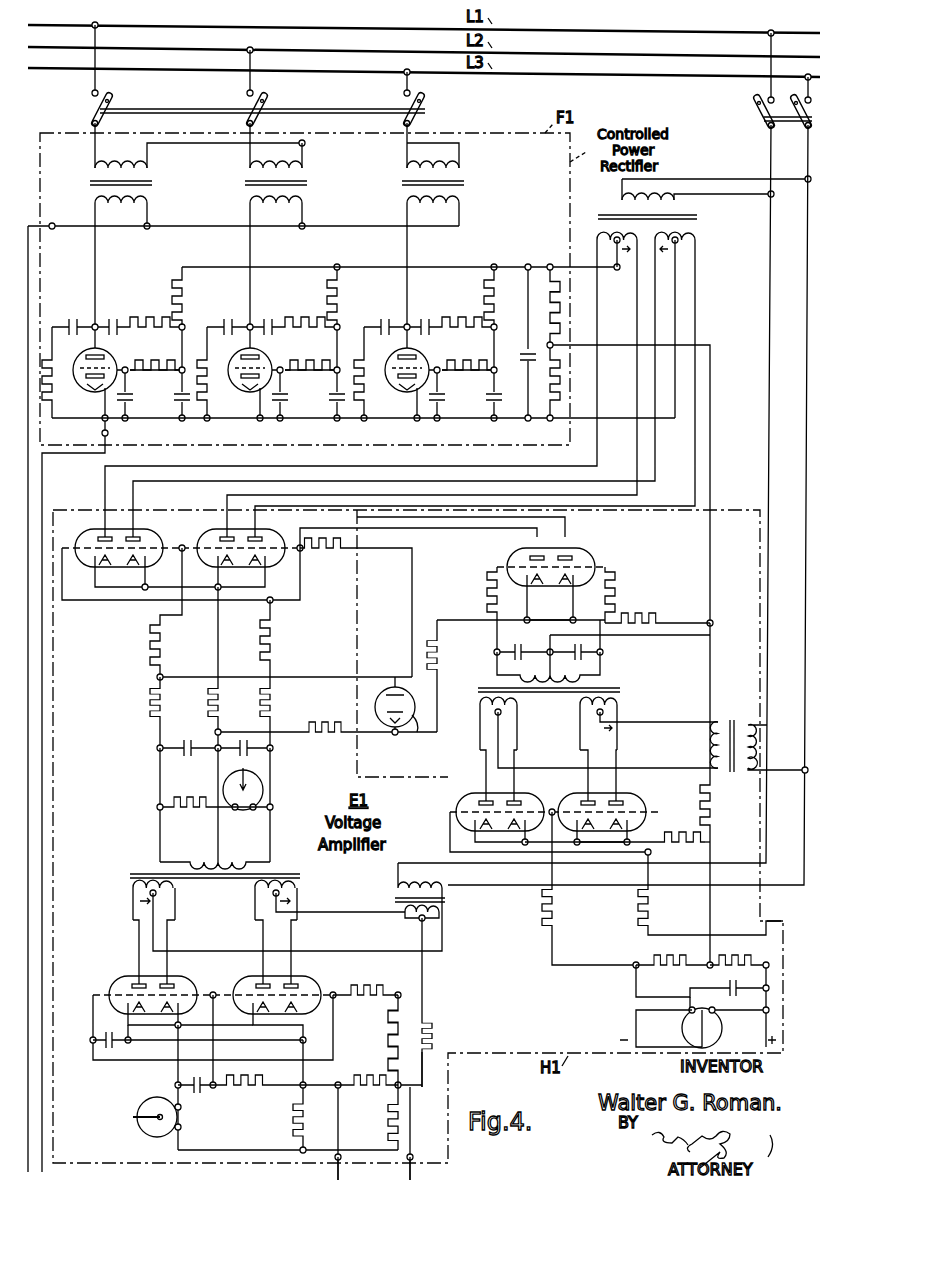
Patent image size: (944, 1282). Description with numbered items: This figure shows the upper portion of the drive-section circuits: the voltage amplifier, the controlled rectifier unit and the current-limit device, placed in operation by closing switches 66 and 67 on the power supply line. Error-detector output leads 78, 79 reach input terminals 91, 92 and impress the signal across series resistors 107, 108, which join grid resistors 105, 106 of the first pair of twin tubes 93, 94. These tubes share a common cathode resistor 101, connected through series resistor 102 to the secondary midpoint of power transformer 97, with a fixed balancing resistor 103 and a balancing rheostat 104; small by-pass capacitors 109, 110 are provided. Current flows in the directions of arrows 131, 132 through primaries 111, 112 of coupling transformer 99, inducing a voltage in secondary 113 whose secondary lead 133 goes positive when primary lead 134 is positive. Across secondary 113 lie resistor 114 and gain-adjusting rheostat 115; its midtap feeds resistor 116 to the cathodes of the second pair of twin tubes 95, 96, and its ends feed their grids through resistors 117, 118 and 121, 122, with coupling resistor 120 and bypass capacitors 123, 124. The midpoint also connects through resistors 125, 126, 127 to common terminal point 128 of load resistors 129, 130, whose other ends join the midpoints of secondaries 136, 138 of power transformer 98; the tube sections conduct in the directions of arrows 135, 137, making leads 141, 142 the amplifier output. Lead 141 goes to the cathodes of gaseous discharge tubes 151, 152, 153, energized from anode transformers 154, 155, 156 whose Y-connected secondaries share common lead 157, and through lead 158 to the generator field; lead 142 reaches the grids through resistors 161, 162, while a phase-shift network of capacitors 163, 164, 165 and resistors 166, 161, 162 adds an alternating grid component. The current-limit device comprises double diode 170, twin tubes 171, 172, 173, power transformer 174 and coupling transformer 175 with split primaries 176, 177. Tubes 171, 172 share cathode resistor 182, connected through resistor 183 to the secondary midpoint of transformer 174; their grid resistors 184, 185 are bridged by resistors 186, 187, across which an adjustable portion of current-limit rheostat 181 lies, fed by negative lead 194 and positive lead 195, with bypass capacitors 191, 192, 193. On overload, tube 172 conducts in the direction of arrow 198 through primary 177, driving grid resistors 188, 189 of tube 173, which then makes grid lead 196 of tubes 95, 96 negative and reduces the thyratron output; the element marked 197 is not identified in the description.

The switch 66 is at (424, 110).
The switch 67 is at (758, 116).
The anode transformer 154 is at (148, 183).
The anode transformer 155 is at (303, 183).
The anode transformer 156 is at (459, 183).
The common lead 157 is at (186, 226).
The lead 158 is at (42, 483).
The power transformer 98 is at (616, 210).
The secondary 138 is at (596, 240).
The secondary 136 is at (690, 238).
The arrow 137 is at (625, 250).
The arrow 135 is at (668, 251).
The output lead 142 is at (452, 267).
The output lead 141 is at (452, 420).
The gaseous discharge tube 151 is at (85, 405).
The gaseous discharge tube 152 is at (250, 405).
The gaseous discharge tube 153 is at (407, 405).
The resistor 161 is at (184, 290).
The resistor 162 is at (175, 360).
The resistor 166 is at (152, 320).
The capacitor 163 is at (113, 322).
The capacitor 164 is at (138, 406).
The capacitor 165 is at (176, 394).
The load resistor 129 is at (558, 320).
The load resistor 130 is at (558, 384).
The common terminal point 128 is at (553, 345).
The twin tube 95 is at (88, 533).
The twin tube 96 is at (211, 533).
The cathode conductor 197 is at (182, 580).
The grid lead 196 is at (290, 595).
The coupling resistor 120 is at (356, 607).
The resistor 118 is at (156, 649).
The resistor 122 is at (276, 647).
The resistor 117 is at (156, 707).
The resistor 116 is at (218, 697).
The resistor 121 is at (278, 697).
The resistor 125 is at (310, 726).
The bypass capacitor 123 is at (193, 731).
The bypass capacitor 124 is at (254, 747).
The resistor 114 is at (173, 799).
The gain-adjusting rheostat 115 is at (256, 780).
The secondary lead 133 is at (158, 827).
The secondary 113 is at (206, 858).
The coupling transformer 99 is at (140, 874).
The primary 111 is at (132, 887).
The primary 112 is at (252, 887).
The arrow 131 is at (136, 904).
The arrow 132 is at (291, 899).
The primary lead 134 is at (293, 946).
The power transformer 97 is at (401, 901).
The double diode 170 is at (404, 715).
The twin tube 173 is at (580, 553).
The grid resistor 188 is at (497, 594).
The grid resistor 189 is at (608, 580).
The resistor 127 is at (640, 614).
The resistor 126 is at (448, 664).
The bypass capacitor 192 is at (505, 645).
The bypass capacitor 193 is at (585, 652).
The coupling transformer 175 is at (620, 688).
The split primary 176 is at (482, 705).
The split primary 177 is at (582, 705).
The arrow 198 is at (612, 717).
The power transformer 174 is at (724, 725).
The twin tube 171 is at (519, 796).
The twin tube 172 is at (624, 796).
The resistor 183 is at (710, 807).
The common cathode resistor 182 is at (686, 835).
The grid resistor 185 is at (545, 911).
The grid resistor 184 is at (640, 911).
The resistor 186 is at (741, 952).
The resistor 187 is at (676, 971).
The negative lead 194 is at (636, 1021).
The positive lead 195 is at (763, 1043).
The current-limit adjusting rheostat 181 is at (682, 1031).
The bypass capacitor 191 is at (735, 1006).
The twin tube 93 is at (116, 980).
The twin tube 94 is at (248, 972).
The grid resistor 105 is at (362, 988).
The resistor 107 is at (393, 1027).
The series resistor 102 is at (442, 1026).
The by-pass capacitor 110 is at (118, 1045).
The resistor 108 is at (384, 1070).
The grid resistor 106 is at (264, 1090).
The by-pass capacitor 109 is at (194, 1095).
The fixed balancing resistor 103 is at (295, 1122).
The common cathode resistor 101 is at (392, 1114).
The rheostat 104 is at (138, 1129).
The input terminal 92 is at (408, 1159).
The input terminal 91 is at (334, 1162).
The output lead 78 is at (338, 1175).
The output lead 79 is at (410, 1175).